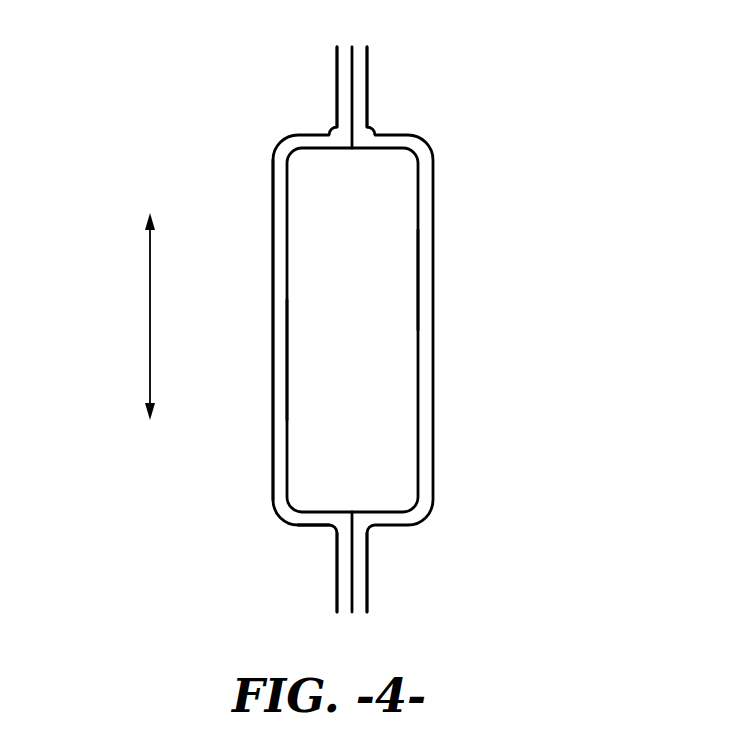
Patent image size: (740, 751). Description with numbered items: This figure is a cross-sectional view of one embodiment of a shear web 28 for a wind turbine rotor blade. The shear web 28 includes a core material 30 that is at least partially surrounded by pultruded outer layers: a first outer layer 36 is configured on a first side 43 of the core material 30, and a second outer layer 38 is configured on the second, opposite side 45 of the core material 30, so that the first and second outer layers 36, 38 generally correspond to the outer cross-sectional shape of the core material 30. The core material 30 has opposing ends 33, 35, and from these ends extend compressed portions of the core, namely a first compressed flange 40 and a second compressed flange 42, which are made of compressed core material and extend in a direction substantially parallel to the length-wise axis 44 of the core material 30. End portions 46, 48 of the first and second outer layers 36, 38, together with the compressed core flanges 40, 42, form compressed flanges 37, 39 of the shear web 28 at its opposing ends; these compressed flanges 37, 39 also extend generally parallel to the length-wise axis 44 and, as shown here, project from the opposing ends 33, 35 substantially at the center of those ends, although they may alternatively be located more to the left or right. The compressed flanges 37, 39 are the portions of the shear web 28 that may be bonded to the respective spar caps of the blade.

The shear web 28 is at (524, 180).
The core material 30 is at (368, 305).
The end of the core material 33 is at (392, 150).
The end of the core material 35 is at (312, 513).
The first outer layer 36 is at (273, 280).
The compressed flange of the shear web 37 is at (322, 100).
The second outer layer 38 is at (433, 378).
The compressed flange of the shear web 39 is at (322, 562).
The first compressed flange 40 is at (352, 107).
The second compressed flange 42 is at (353, 545).
The side of the core material 43 is at (287, 354).
The length-wise axis 44 is at (150, 308).
The side of the core material 45 is at (420, 275).
The end portion of the first outer layer 46 is at (337, 70).
The end portion of the second outer layer 48 is at (367, 70).